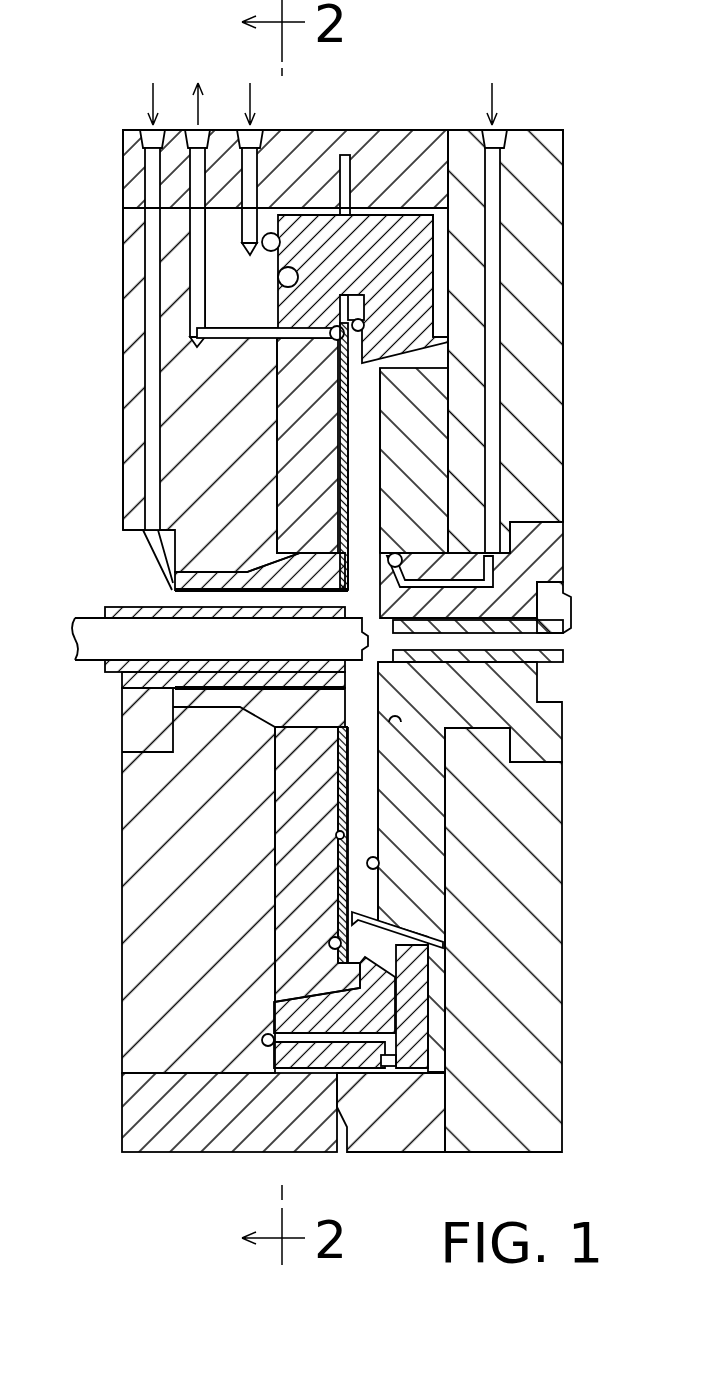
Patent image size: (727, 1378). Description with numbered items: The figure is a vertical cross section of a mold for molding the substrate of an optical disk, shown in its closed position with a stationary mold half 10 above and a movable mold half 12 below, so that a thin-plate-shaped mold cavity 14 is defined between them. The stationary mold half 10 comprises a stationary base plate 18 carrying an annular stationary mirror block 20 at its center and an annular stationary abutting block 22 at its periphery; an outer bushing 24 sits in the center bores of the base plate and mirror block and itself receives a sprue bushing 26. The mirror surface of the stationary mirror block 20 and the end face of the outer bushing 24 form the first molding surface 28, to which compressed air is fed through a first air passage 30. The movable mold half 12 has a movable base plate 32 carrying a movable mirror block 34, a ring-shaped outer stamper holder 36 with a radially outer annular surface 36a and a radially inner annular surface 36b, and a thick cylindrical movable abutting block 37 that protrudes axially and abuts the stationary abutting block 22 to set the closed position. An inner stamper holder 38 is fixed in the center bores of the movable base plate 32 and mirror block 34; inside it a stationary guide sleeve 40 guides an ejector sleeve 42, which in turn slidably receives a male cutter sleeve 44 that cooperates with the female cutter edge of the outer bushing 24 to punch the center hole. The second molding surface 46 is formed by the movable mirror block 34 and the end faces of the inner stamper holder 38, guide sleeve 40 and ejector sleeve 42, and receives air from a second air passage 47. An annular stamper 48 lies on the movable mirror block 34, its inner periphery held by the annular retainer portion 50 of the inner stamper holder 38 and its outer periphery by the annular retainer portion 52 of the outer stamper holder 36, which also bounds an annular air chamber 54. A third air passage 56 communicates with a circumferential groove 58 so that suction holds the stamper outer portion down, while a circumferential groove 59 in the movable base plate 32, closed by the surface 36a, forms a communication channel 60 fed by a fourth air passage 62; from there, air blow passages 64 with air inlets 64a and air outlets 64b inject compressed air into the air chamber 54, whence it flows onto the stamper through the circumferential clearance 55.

The stationary mold half 10 is at (548, 96).
The movable mold half 12 is at (125, 100).
The mold cavity 14 is at (368, 472).
The stationary base plate 18 is at (545, 816).
The stationary mirror block 20 is at (432, 786).
The stationary abutting block 22 is at (386, 1125).
The outer bushing 24 is at (543, 538).
The sprue bushing 26 is at (558, 608).
The first molding surface 28 is at (376, 870).
The first air passage 30 is at (494, 296).
The movable base plate 32 is at (170, 1028).
The movable mirror block 34 is at (303, 884).
The outer stamper holder 36 is at (370, 205).
The radially outer annular surface 36a is at (287, 282).
The radially inner annular surface 36b is at (345, 333).
The movable abutting block 37 is at (172, 1132).
The inner stamper holder 38 is at (215, 745).
The stationary guide sleeve 40 is at (140, 713).
The ejector sleeve 42 is at (140, 608).
The male cutter sleeve 44 is at (90, 655).
The second molding surface 46 is at (338, 808).
The second air passage 47 is at (150, 365).
The stamper 48 is at (330, 465).
The annular retainer portion 50 is at (348, 732).
The annular retainer portion 52 is at (405, 922).
The annular air chamber 54 is at (400, 250).
The circumferential clearance 55 is at (386, 400).
The third air passage 56 is at (197, 258).
The circumferential groove 58 is at (333, 945).
The circumferential groove 59 is at (266, 1042).
The circumferential communication channel 60 is at (265, 244).
The fourth air passage 62 is at (257, 160).
The air blow passage 64 is at (392, 998).
The air inlet 64a is at (283, 1046).
The air outlet 64b is at (395, 952).